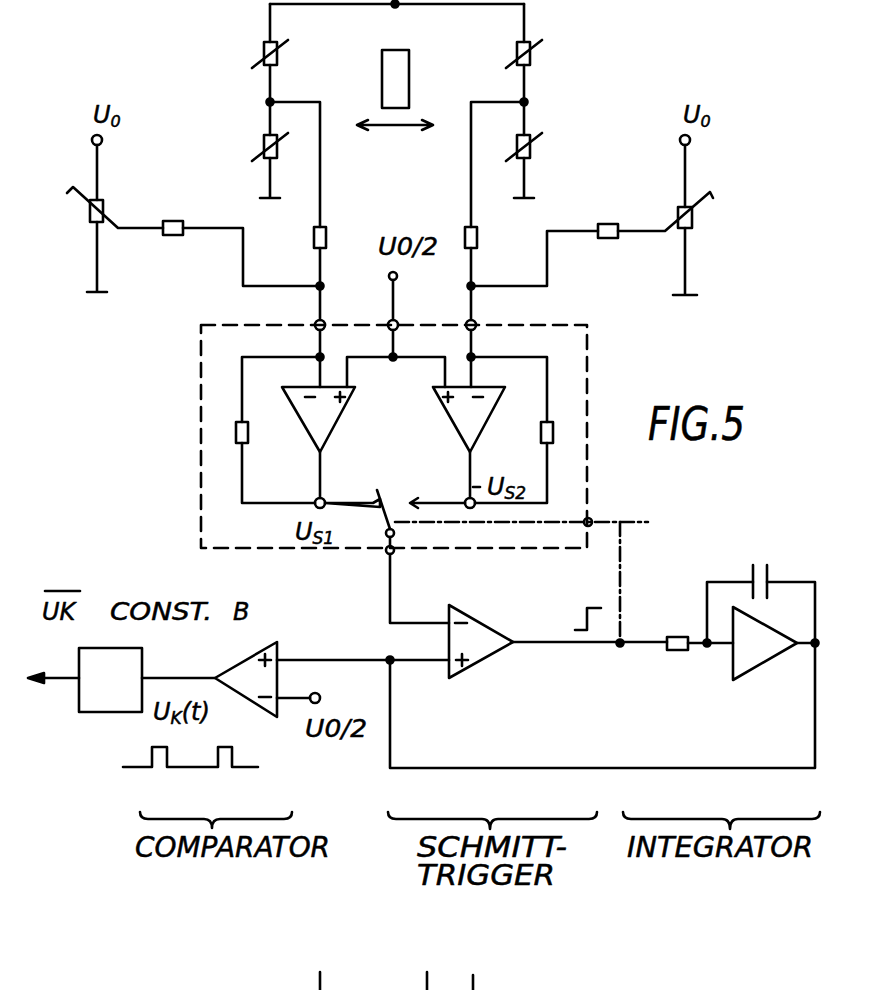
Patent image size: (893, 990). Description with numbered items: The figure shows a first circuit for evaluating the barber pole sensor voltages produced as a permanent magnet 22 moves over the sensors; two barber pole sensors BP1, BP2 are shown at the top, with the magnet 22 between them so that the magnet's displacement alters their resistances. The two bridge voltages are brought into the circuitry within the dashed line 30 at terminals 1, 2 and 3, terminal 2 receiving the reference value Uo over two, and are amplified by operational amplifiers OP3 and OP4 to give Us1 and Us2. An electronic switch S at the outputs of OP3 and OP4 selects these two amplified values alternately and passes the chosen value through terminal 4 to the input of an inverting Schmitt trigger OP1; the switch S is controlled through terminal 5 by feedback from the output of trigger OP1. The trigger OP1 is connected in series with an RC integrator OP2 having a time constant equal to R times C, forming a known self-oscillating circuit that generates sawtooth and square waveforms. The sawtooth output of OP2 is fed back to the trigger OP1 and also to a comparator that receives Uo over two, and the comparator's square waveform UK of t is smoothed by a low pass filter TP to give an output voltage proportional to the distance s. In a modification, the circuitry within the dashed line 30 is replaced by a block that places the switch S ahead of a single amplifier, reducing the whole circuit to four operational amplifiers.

The input terminal 1 of block 30 1 is at (313, 338).
The input terminal 2 (U0/2 reference) of block 30 2 is at (382, 338).
The input terminal 3 of block 30 3 is at (461, 338).
The output terminal 4 of block 30 4 is at (417, 584).
The switch control terminal 5 is at (521, 567).
The permanent magnet 22 is at (410, 107).
The dashed line 30 is at (202, 483).
The first magnetoresistive bridge (barber pole) sensor BP1 is at (244, 101).
The second magnetoresistive bridge (barber pole) sensor BP2 is at (557, 101).
The inverting Schmitt trigger OP1 is at (486, 658).
The RC integrator OP2 is at (774, 661).
The operational amplifier OP3 is at (334, 442).
The operational amplifier OP4 is at (481, 442).
The electronic switch S is at (388, 501).
The low pass filter TP is at (110, 680).